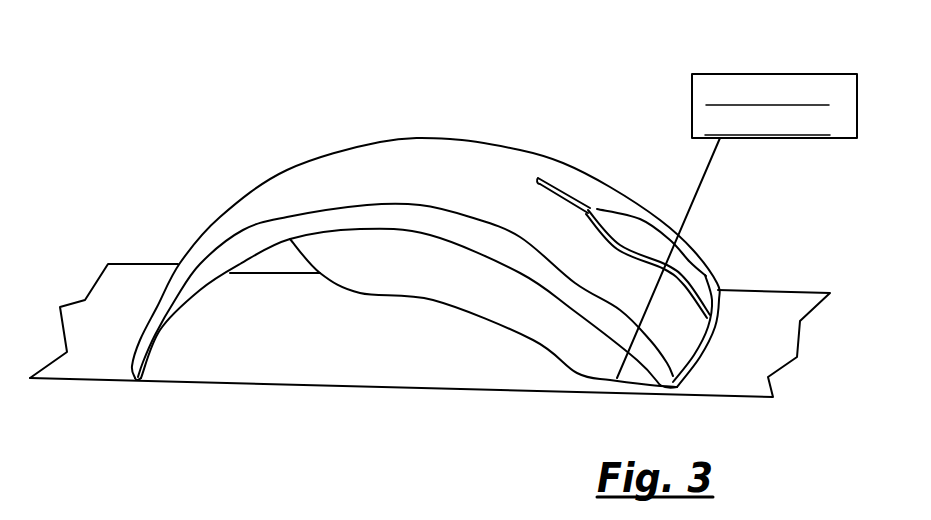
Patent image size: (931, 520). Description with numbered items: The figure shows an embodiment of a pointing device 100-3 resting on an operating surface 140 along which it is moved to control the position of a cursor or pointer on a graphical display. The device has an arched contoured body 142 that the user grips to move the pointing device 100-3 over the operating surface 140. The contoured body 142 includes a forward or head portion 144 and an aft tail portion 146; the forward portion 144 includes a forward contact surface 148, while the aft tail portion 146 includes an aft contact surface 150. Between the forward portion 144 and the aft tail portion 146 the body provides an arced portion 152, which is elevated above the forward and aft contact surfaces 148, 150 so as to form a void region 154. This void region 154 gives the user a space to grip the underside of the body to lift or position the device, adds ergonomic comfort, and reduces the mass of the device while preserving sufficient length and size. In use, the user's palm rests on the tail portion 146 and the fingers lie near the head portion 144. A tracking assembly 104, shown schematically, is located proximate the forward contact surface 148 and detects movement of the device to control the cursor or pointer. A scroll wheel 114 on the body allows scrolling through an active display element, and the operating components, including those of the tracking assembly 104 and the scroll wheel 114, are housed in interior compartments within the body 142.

The pointing device 100-3 is at (641, 43).
The tracking assembly 104 is at (783, 46).
The scroll wheel 114 is at (627, 227).
The operating surface 140 is at (755, 340).
The contoured body 142 is at (380, 175).
The forward portion 144 is at (755, 243).
The aft tail portion 146 is at (219, 226).
The forward contact surface 148 is at (650, 390).
The aft contact surface 150 is at (135, 379).
The arced portion 152 is at (428, 168).
The void region 154 is at (355, 348).